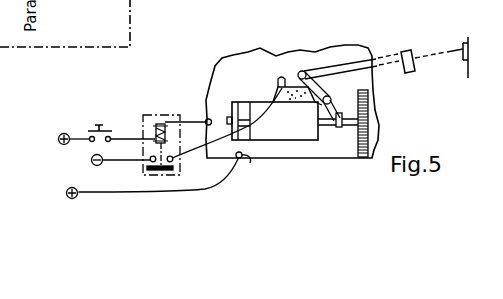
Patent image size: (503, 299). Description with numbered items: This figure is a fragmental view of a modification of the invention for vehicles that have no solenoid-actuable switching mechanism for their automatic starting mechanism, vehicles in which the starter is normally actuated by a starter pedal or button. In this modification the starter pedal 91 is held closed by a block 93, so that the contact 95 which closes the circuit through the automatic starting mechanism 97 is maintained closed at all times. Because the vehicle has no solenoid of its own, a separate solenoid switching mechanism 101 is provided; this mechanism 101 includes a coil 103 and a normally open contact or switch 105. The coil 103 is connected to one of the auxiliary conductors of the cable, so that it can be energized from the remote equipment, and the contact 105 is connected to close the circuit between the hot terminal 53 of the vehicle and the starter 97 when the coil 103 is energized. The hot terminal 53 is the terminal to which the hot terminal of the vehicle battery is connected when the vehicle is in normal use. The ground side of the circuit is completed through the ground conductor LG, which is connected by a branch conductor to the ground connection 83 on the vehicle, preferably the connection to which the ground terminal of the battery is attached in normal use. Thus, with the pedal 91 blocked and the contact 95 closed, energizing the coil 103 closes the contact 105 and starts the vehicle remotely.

The terminal 53 is at (91, 162).
The ground connection 83 is at (165, 175).
The starter pedal 91 is at (411, 50).
The block 93 is at (464, 46).
The contact 95 is at (297, 105).
The automatic starting mechanism 97 is at (272, 128).
The solenoid switching mechanism 101 is at (180, 117).
The coil 103 is at (157, 125).
The normally open contact 105 is at (147, 169).
The ground conductor LG is at (218, 184).